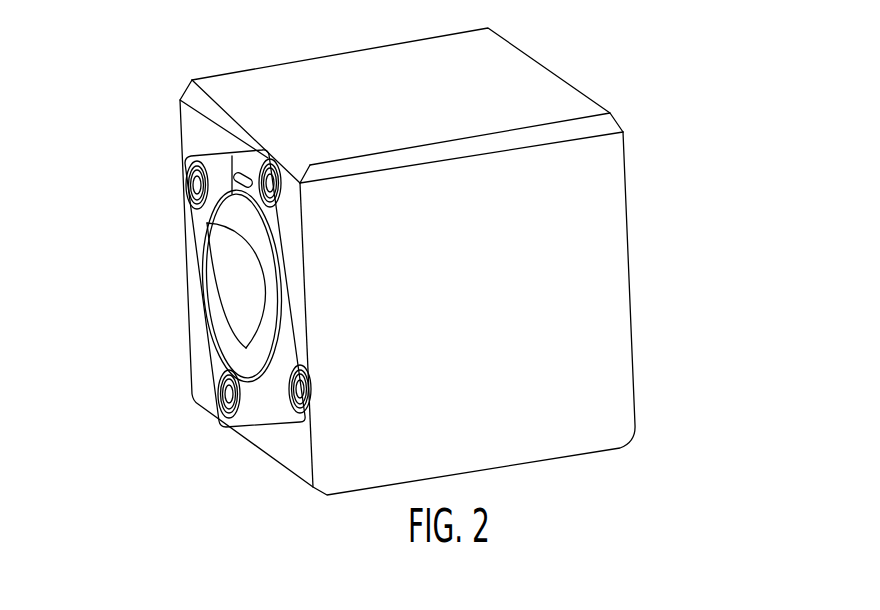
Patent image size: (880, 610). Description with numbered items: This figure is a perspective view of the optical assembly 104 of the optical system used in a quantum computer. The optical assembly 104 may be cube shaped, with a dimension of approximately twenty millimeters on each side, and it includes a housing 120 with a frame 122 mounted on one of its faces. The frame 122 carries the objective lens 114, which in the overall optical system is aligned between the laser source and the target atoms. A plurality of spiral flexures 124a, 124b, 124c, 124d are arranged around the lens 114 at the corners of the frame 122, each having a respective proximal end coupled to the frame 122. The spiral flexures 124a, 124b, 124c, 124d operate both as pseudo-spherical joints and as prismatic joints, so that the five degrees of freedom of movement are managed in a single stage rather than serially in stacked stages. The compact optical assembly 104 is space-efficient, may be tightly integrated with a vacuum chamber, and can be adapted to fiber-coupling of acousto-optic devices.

The optical assembly 104 is at (407, 289).
The housing 120 is at (603, 272).
The frame 122 is at (185, 289).
The objective lens 114 is at (223, 317).
The spiral flexure 124a is at (187, 183).
The spiral flexure 124b is at (268, 158).
The spiral flexure 124c is at (293, 412).
The spiral flexure 124d is at (213, 400).